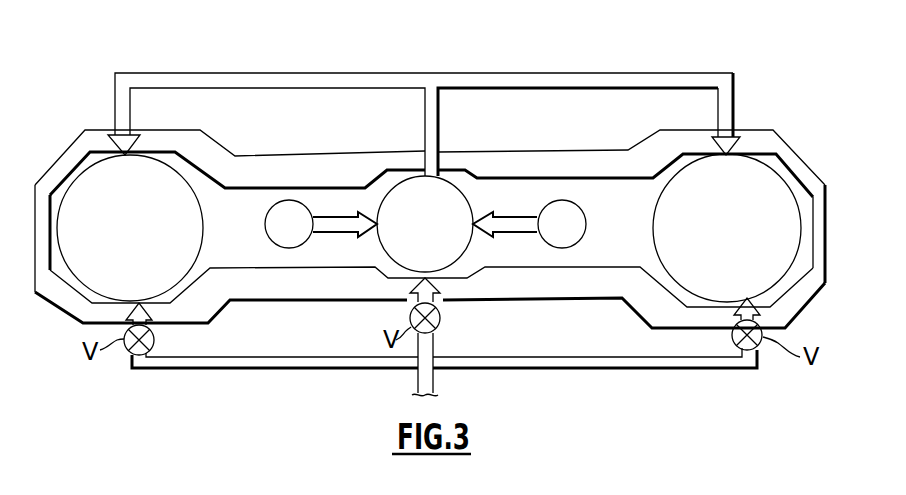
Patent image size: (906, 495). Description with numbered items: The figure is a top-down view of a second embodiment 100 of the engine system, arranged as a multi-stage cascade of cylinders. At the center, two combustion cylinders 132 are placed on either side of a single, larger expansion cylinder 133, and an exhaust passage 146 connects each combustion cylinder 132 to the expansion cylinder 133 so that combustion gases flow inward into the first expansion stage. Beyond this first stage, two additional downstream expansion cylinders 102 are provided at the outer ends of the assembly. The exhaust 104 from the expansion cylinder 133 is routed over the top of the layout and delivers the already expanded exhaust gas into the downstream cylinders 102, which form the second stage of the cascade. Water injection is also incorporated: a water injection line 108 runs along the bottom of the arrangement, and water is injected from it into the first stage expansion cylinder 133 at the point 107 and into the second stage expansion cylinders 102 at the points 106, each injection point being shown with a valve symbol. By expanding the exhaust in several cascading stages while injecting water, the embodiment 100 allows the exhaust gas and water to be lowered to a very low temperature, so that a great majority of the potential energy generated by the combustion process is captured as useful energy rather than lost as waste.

The embodiment 100 is at (708, 396).
The downstream expansion cylinders 102 is at (85, 267).
The exhaust 104 is at (272, 82).
The water injection into second stage expansion cylinders 106 is at (133, 362).
The water injection into first stage expansion cylinder 107 is at (430, 344).
The water injection line 108 is at (280, 363).
The combustion cylinders 132 is at (275, 248).
The expansion cylinder 133 is at (405, 252).
The exhaust passage 146 is at (348, 228).